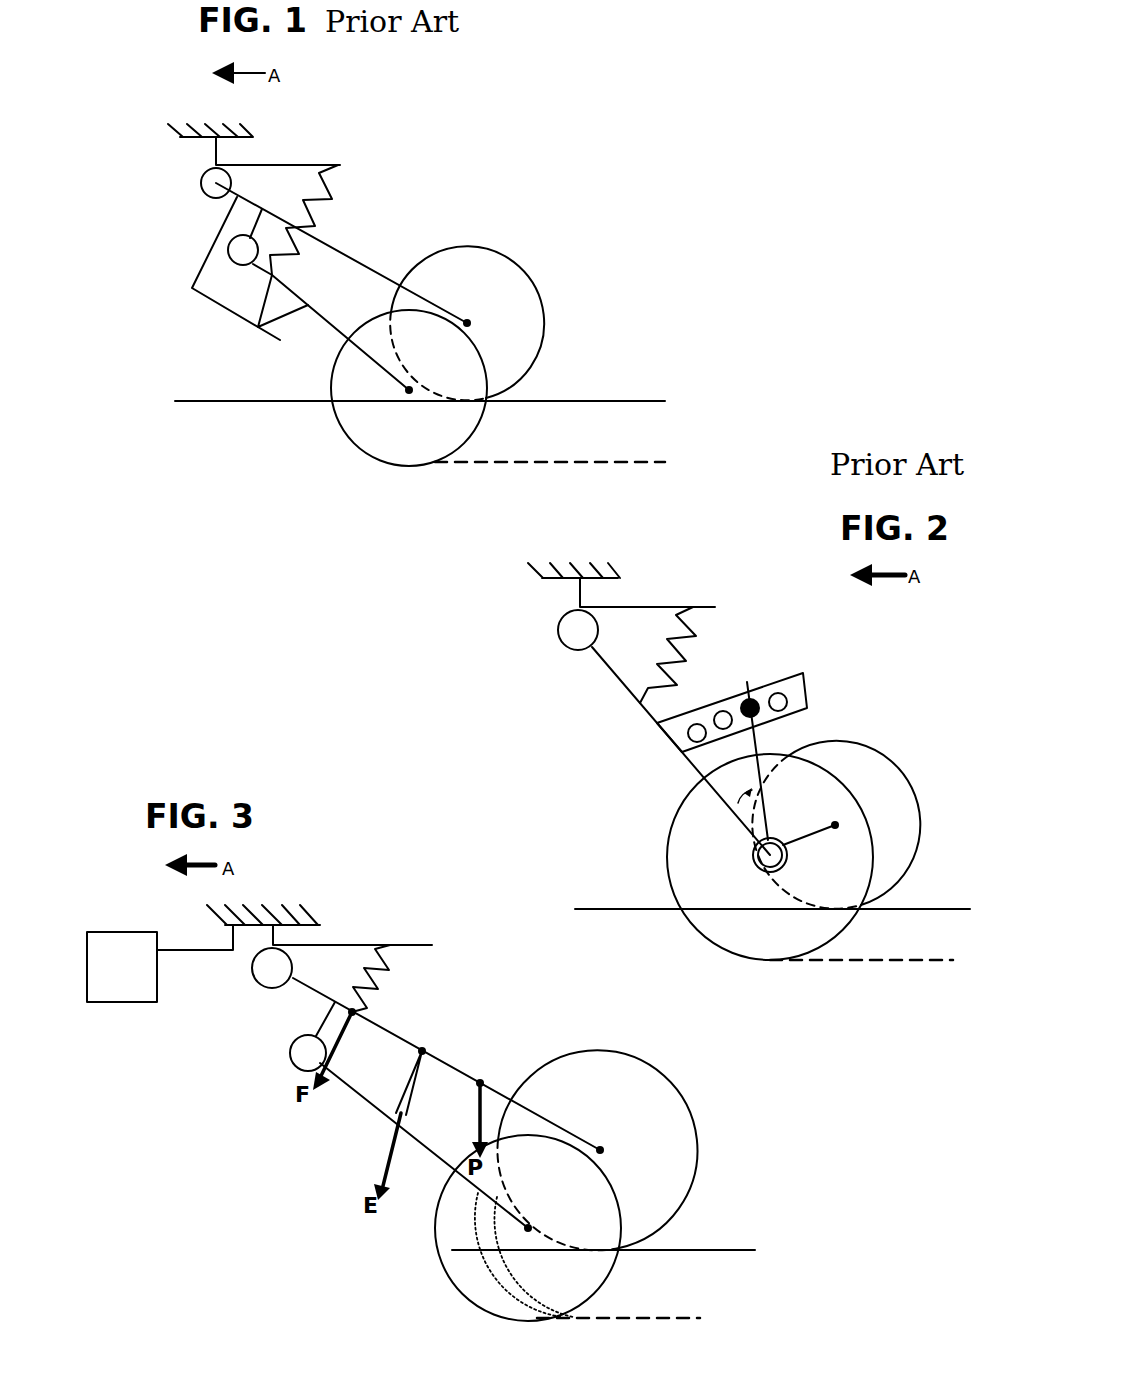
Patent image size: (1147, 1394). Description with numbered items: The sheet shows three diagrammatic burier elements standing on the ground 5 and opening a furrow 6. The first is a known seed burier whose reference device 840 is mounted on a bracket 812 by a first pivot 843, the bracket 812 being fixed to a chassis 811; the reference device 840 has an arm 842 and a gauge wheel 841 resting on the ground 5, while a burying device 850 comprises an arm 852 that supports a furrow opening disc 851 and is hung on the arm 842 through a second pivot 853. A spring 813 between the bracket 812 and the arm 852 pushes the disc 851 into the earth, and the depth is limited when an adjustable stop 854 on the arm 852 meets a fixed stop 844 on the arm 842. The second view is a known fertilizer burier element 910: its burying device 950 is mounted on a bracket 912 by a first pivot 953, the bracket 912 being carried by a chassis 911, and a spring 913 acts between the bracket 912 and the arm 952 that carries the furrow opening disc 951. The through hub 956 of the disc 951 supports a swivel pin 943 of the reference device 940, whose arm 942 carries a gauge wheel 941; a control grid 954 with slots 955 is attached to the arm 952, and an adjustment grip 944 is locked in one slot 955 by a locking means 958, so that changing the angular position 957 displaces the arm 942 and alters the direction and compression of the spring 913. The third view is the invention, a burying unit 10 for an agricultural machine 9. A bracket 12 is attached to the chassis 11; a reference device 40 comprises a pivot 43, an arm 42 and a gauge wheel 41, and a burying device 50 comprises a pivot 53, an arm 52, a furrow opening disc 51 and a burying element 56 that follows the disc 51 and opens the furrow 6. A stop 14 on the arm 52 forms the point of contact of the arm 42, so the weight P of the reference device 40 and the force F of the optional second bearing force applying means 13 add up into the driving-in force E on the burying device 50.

In FIG. 1, the chassis 811 is at (246, 128).
In FIG. 1, the bracket 812 is at (298, 164).
In FIG. 1, the spring 813 is at (330, 182).
In FIG. 1, the first pivot 843 is at (203, 188).
In FIG. 1, the arm 842 is at (325, 243).
In FIG. 1, the second pivot 853 is at (228, 258).
In FIG. 1, the fixed stop 844 is at (198, 302).
In FIG. 1, the adjustable stop 854 is at (248, 323).
In FIG. 1, the arm 852 is at (325, 322).
In FIG. 1, the reference device 840 is at (540, 212).
In FIG. 1, the gauge wheel 841 is at (543, 360).
In FIG. 1, the burying device 850 is at (343, 446).
In FIG. 1, the furrow opening disc 851 is at (338, 428).
In FIG. 1, the ground 5 is at (521, 402).
In FIG. 2, the ground 5 is at (890, 912).
In FIG. 3, the ground 5 is at (722, 1252).
In FIG. 1, the furrow 6 is at (557, 463).
In FIG. 2, the furrow 6 is at (923, 961).
In FIG. 3, the furrow 6 is at (680, 1320).
In FIG. 2, the chassis 911 is at (613, 570).
In FIG. 2, the bracket 912 is at (670, 603).
In FIG. 2, the spring 913 is at (707, 620).
In FIG. 2, the first pivot 953 is at (558, 642).
In FIG. 2, the arm 952 is at (601, 666).
In FIG. 2, the control grid 954 is at (807, 673).
In FIG. 2, the locking means 958 is at (770, 690).
In FIG. 2, the slots 955 is at (703, 707).
In FIG. 2, the reference device 940 is at (868, 740).
In FIG. 2, the gauge wheel 941 is at (873, 750).
In FIG. 2, the adjustment grip 944 is at (757, 738).
In FIG. 2, the arm 942 is at (817, 838).
In FIG. 2, the fertilizer burier element 910 is at (598, 772).
In FIG. 2, the angular position 957 is at (740, 798).
In FIG. 2, the burying device 950 is at (652, 877).
In FIG. 2, the furrow opening disc 951 is at (667, 860).
In FIG. 2, the through hub 956 is at (776, 872).
In FIG. 2, the swivel pin 943 is at (787, 868).
In FIG. 3, the agricultural machine 9 is at (127, 1003).
In FIG. 3, the chassis 11 is at (320, 923).
In FIG. 3, the bracket 12 is at (410, 945).
In FIG. 3, the second bearing force applying means 13 is at (395, 975).
In FIG. 3, the pivot 43 is at (270, 988).
In FIG. 3, the arm 42 is at (380, 1027).
In FIG. 3, the pivot 53 is at (295, 1066).
In FIG. 3, the arm 52 is at (366, 1098).
In FIG. 3, the stop 14 is at (392, 1112).
In FIG. 3, the reference device 40 is at (572, 1038).
In FIG. 3, the gauge wheel 41 is at (676, 1212).
In FIG. 3, the burying unit 10 is at (268, 1190).
In FIG. 3, the burying device 50 is at (453, 1288).
In FIG. 3, the furrow opening disc 51 is at (438, 1308).
In FIG. 3, the burying element 56 is at (520, 1293).